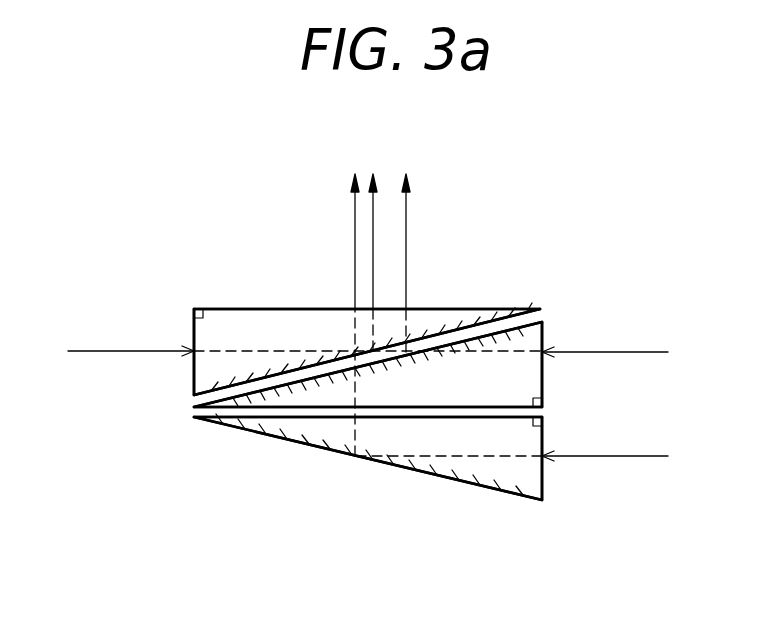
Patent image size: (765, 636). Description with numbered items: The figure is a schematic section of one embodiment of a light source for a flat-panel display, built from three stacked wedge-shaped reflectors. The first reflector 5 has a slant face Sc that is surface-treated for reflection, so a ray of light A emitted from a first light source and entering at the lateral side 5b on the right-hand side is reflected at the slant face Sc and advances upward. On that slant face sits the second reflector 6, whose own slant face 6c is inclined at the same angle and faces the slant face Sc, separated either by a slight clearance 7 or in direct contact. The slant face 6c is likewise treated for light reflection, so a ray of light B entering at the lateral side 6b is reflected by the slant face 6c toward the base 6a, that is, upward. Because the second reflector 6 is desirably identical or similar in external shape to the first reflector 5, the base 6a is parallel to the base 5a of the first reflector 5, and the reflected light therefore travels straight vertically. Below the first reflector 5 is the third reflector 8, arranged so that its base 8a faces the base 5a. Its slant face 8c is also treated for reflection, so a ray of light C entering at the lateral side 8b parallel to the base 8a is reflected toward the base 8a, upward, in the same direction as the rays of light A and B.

The first reflector 5 is at (442, 395).
The base of the first reflector 5a is at (280, 405).
The lateral side of the first reflector 5b is at (542, 377).
The second reflector 6 is at (240, 323).
The base of the second reflector 6a is at (460, 309).
The lateral side of the second reflector 6b is at (194, 368).
The slant face of the second reflector 6c is at (283, 371).
The clearance 7 is at (540, 312).
The third reflector 8 is at (523, 468).
The base of the third reflector 8a is at (323, 420).
The lateral side of the third reflector 8b is at (542, 470).
The slant face of the third reflector 8c is at (475, 485).
The slant face of the first reflector Sc is at (437, 347).
The ray of light A is at (546, 273).
The ray of light B is at (293, 271).
The ray of light C is at (522, 325).